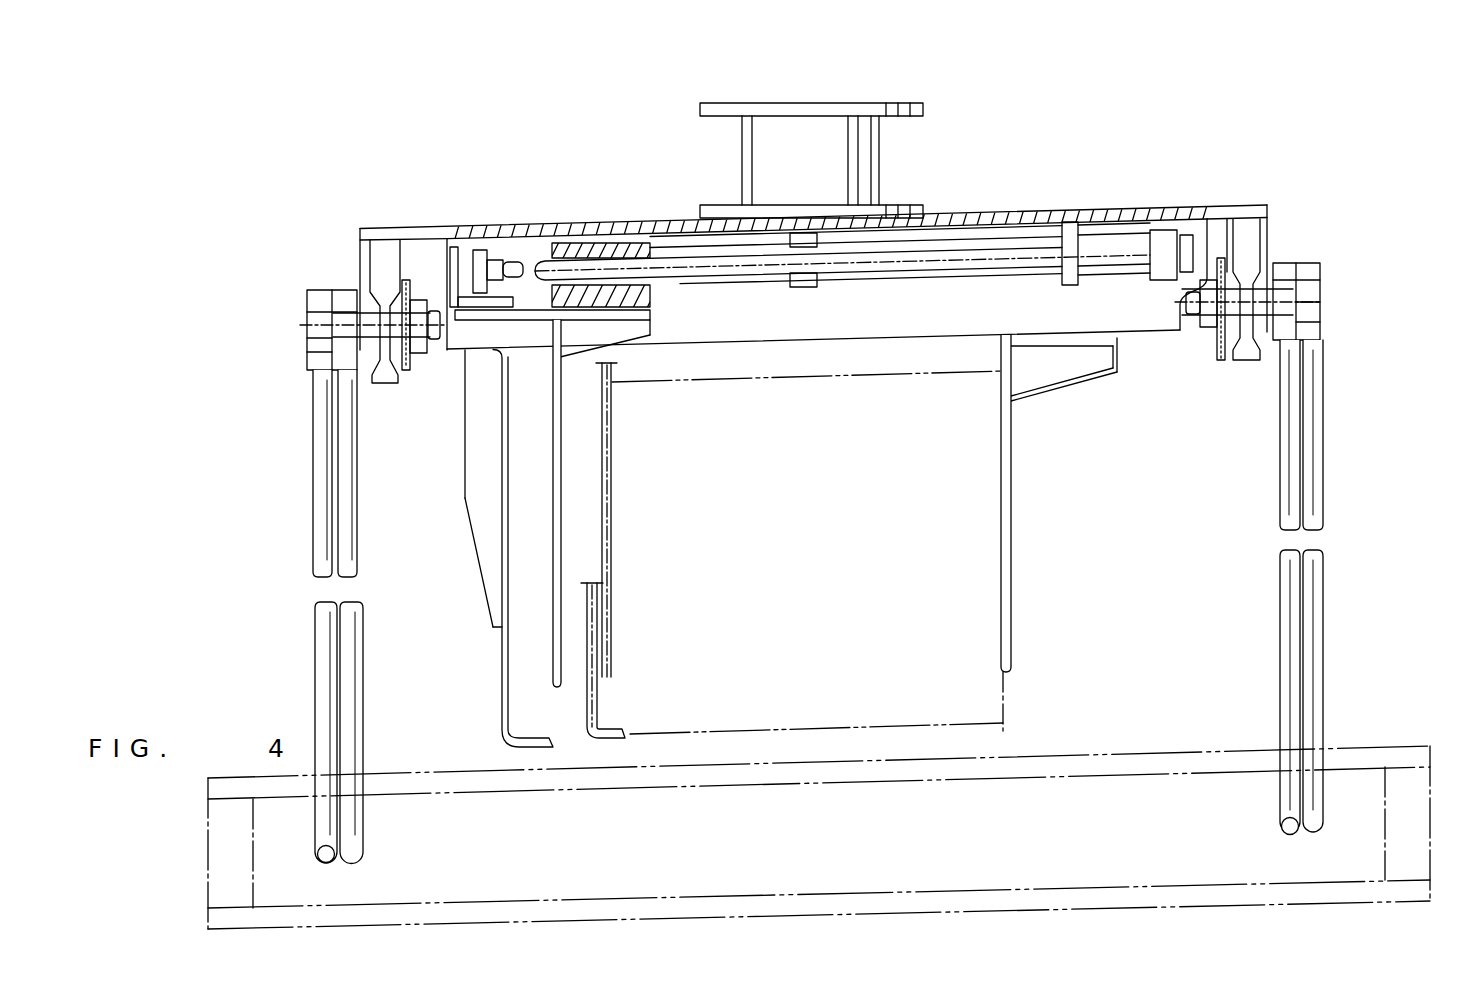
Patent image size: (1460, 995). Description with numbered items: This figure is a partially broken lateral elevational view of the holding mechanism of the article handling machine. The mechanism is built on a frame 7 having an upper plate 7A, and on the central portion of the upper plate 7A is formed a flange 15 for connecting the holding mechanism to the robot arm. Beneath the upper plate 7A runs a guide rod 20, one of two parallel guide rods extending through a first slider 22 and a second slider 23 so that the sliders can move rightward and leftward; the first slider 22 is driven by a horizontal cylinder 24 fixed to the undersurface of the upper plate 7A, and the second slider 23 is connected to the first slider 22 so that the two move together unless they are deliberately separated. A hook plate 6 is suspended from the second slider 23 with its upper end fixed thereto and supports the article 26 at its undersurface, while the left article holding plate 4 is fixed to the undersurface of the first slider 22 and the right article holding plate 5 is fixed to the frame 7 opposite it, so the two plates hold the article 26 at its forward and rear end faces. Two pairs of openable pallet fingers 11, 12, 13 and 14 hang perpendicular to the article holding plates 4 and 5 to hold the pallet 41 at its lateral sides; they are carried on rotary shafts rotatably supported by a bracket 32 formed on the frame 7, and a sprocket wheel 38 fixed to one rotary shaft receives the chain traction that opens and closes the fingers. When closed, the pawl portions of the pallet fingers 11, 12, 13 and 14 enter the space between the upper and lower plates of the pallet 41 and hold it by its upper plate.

The article holding plate 4 is at (559, 646).
The article holding plate 5 is at (1012, 652).
The hook plate 6 is at (503, 704).
The frame 7 is at (1229, 205).
The upper plate 7A is at (988, 222).
The pallet finger 11 is at (318, 453).
The pallet finger 12 is at (1315, 470).
The pallet finger 13 is at (355, 545).
The pallet finger 14 is at (1280, 497).
The flange 15 is at (923, 107).
The guide rod 20 is at (753, 273).
The first slider 22 is at (652, 313).
The second slider 23 is at (506, 338).
The horizontal cylinder 24 is at (889, 278).
The article 26 is at (1006, 727).
The bracket 32 is at (385, 262).
The sprocket wheel 38 is at (407, 372).
The pallet 41 is at (1182, 758).